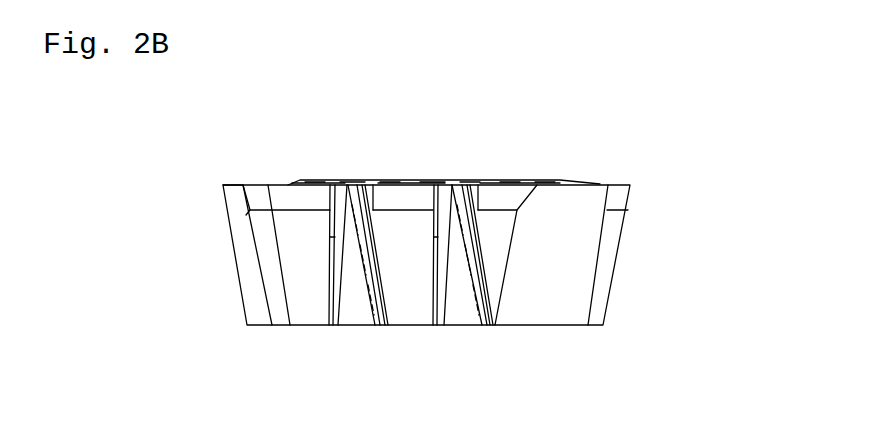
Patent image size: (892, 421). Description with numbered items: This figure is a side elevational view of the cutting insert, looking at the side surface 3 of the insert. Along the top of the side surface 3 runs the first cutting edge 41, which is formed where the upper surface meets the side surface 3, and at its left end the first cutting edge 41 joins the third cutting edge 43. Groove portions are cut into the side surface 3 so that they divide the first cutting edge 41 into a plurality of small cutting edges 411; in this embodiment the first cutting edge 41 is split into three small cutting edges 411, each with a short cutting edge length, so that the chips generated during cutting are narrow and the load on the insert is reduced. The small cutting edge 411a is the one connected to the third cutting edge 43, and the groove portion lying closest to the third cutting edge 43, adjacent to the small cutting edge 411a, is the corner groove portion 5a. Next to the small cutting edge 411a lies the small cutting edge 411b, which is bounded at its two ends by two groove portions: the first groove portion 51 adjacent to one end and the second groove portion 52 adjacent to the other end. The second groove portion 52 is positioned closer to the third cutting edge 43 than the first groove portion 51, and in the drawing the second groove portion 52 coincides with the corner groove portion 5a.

The side surface 3 is at (573, 258).
The first cutting edge 41 is at (542, 95).
The small cutting edge 411 is at (495, 182).
The small cutting edge 411a is at (300, 182).
The small cutting edge 411b is at (412, 182).
The third cutting edge 43 is at (253, 183).
The first groove portion 51 is at (462, 313).
The second groove portion 52 is at (347, 283).
The corner groove portion 5a is at (350, 313).